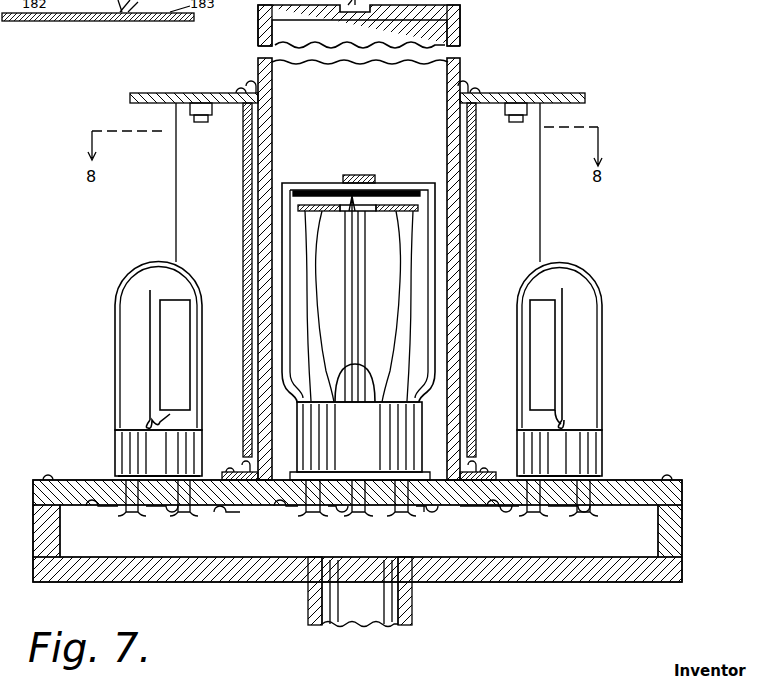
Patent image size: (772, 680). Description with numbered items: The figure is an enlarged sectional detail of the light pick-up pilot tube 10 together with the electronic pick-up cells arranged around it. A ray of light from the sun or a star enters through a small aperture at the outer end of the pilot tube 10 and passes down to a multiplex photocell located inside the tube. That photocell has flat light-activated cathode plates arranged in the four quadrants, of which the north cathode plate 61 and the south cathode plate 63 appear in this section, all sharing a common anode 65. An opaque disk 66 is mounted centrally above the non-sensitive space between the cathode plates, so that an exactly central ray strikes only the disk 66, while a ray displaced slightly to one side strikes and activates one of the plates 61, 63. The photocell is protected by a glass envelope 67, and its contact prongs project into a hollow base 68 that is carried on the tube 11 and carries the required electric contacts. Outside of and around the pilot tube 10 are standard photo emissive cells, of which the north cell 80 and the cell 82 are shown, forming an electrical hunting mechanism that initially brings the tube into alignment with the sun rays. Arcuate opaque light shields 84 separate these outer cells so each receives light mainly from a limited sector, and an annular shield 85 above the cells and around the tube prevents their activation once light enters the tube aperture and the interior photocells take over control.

The light pick-up pilot tube 10 is at (452, 40).
The tube 11 is at (308, 600).
The north cathode plate 61 is at (392, 306).
The south cathode plate 63 is at (319, 306).
The common anode 65 is at (392, 188).
The opaque disk 66 is at (348, 178).
The glass envelope 67 is at (425, 366).
The hollow base 68 is at (357, 528).
The north photo emissive cell 80 is at (596, 298).
The photo emissive cell 82 is at (120, 288).
The arcuate opaque light shield 84 is at (543, 160).
The annular shield 85 is at (572, 88).